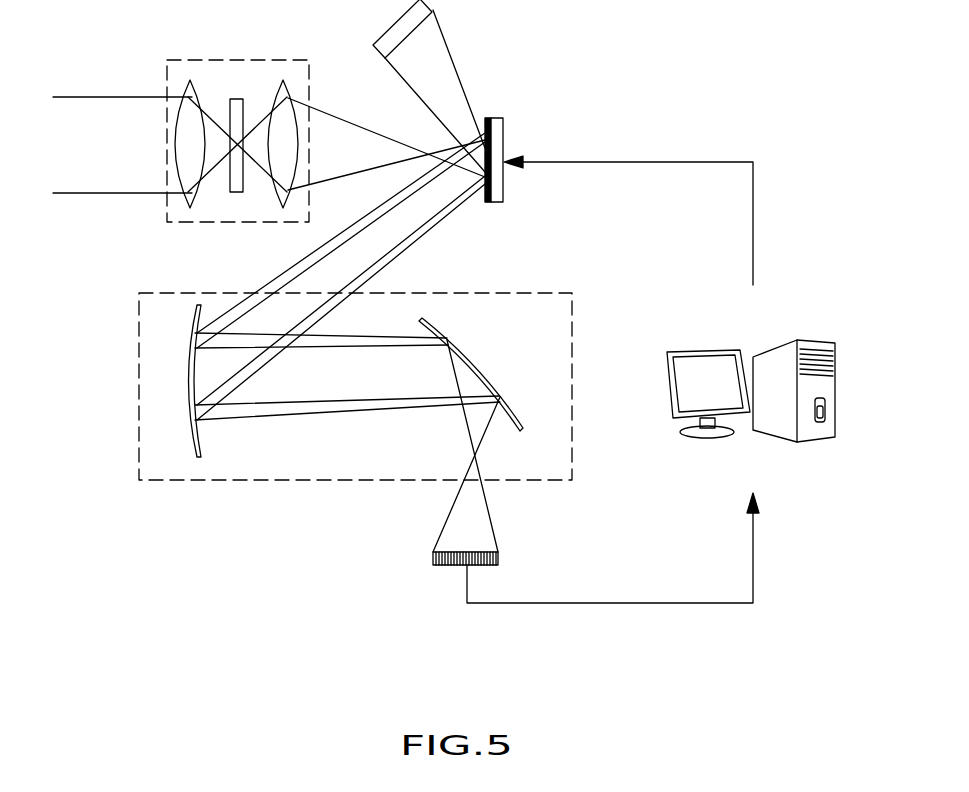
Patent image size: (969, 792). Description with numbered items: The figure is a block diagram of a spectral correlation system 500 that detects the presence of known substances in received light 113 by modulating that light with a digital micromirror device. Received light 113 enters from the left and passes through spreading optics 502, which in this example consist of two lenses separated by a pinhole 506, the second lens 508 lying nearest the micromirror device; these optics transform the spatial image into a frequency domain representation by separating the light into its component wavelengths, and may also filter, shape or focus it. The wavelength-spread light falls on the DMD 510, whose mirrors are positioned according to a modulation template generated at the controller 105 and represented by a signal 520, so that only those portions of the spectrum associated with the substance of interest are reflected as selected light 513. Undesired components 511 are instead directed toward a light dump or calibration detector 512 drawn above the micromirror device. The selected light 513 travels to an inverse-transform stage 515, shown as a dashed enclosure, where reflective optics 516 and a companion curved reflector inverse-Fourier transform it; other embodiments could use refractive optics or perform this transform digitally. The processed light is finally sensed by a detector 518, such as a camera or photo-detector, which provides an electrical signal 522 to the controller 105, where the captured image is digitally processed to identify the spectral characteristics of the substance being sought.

The spectral correlation system 500 is at (715, 68).
The received light 113 is at (90, 178).
The spreading optics 502 is at (180, 222).
The pinhole 506 is at (236, 193).
The lens 508 is at (287, 88).
The DMD 510 is at (503, 130).
The undesired light components 511 is at (453, 90).
The light dump or calibration detector 512 is at (428, 3).
The selected reflected light 513 is at (437, 203).
The spectrometer module 515 is at (288, 480).
The reflective optics 516 is at (483, 367).
The detector 518 is at (498, 556).
The signal 520 is at (611, 162).
The electrical signal 522 is at (668, 605).
The controller 105 is at (833, 370).